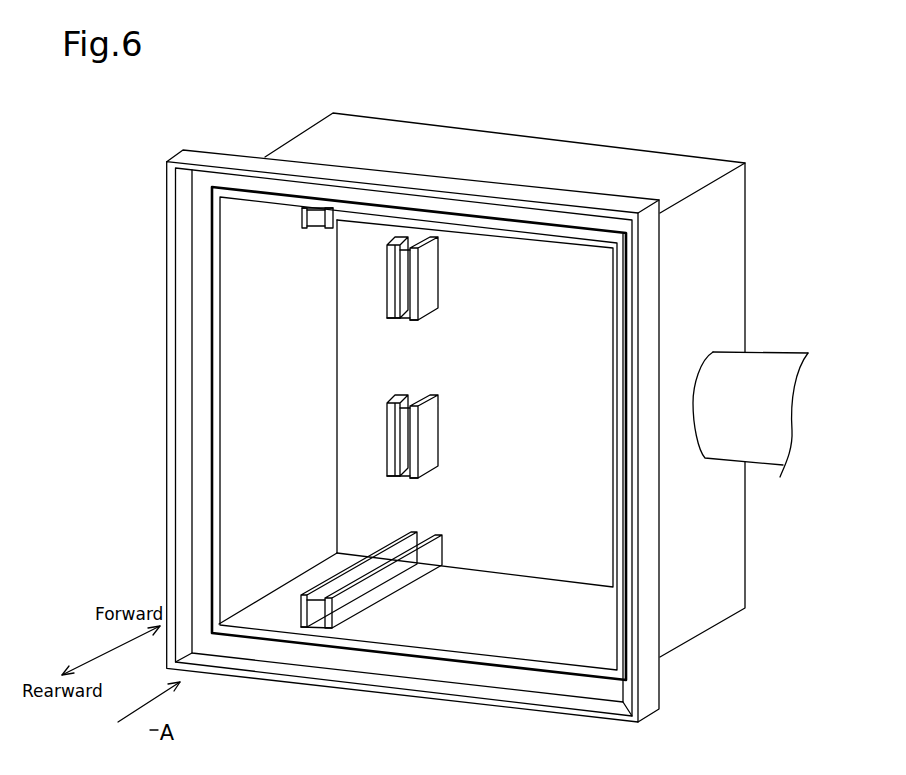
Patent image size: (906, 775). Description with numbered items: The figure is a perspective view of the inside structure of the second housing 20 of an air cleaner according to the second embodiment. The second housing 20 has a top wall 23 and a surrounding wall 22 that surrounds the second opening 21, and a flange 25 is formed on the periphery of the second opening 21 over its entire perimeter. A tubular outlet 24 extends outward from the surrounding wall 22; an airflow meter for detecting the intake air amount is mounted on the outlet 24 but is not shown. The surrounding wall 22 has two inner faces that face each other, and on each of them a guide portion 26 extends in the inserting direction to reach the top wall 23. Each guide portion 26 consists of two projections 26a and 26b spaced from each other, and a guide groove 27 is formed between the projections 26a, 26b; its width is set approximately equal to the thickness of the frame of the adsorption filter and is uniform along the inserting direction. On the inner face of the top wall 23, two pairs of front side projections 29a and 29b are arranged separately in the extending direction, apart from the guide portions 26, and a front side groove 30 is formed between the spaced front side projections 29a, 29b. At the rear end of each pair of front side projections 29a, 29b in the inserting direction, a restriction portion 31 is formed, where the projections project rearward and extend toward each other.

The second housing 20 is at (254, 136).
The second opening 21 is at (219, 428).
The surrounding wall 22 is at (733, 525).
The top wall 23 is at (515, 544).
The tubular outlet 24 is at (766, 368).
The flange 25 is at (449, 674).
The guide portion 26 is at (327, 230).
The projection 26a is at (328, 210).
The projection 26b is at (302, 217).
The guide groove 27 is at (313, 230).
The front side projection 29a is at (415, 267).
The front side projection 29b is at (387, 275).
The front side groove 30 is at (397, 283).
The restriction portion 31 is at (395, 321).